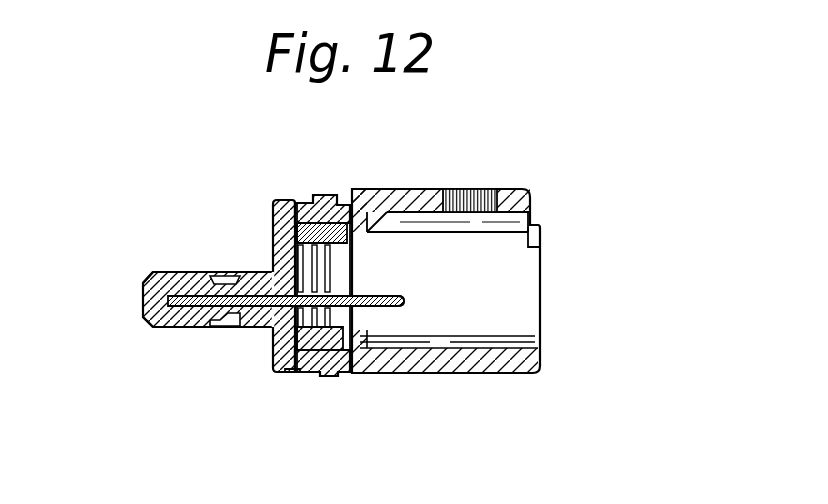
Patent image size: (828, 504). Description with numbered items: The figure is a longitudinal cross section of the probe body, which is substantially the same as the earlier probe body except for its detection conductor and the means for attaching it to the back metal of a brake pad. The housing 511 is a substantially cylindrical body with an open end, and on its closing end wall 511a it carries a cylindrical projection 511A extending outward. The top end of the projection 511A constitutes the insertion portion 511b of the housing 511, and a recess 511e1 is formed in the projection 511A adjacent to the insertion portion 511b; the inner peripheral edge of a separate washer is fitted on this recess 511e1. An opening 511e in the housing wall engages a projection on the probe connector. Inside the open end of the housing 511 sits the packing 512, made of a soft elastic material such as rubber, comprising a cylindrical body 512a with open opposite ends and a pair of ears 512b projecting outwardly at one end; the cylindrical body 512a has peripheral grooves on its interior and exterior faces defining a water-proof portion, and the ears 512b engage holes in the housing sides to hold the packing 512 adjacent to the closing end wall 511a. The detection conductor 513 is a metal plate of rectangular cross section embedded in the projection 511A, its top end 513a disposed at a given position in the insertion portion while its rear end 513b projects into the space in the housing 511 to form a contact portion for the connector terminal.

The housing 511 is at (393, 186).
The cylindrical projection 511A is at (175, 268).
The closing end wall 511a is at (272, 373).
The insertion portion 511b is at (157, 329).
The opening 511e is at (477, 200).
The recess 511e1 is at (223, 322).
The packing 512 is at (345, 198).
The cylindrical body 512a is at (298, 203).
The ears 512b is at (345, 377).
The detection conductor 513 is at (266, 291).
The top end 513a is at (156, 271).
The rear end 513b is at (403, 310).